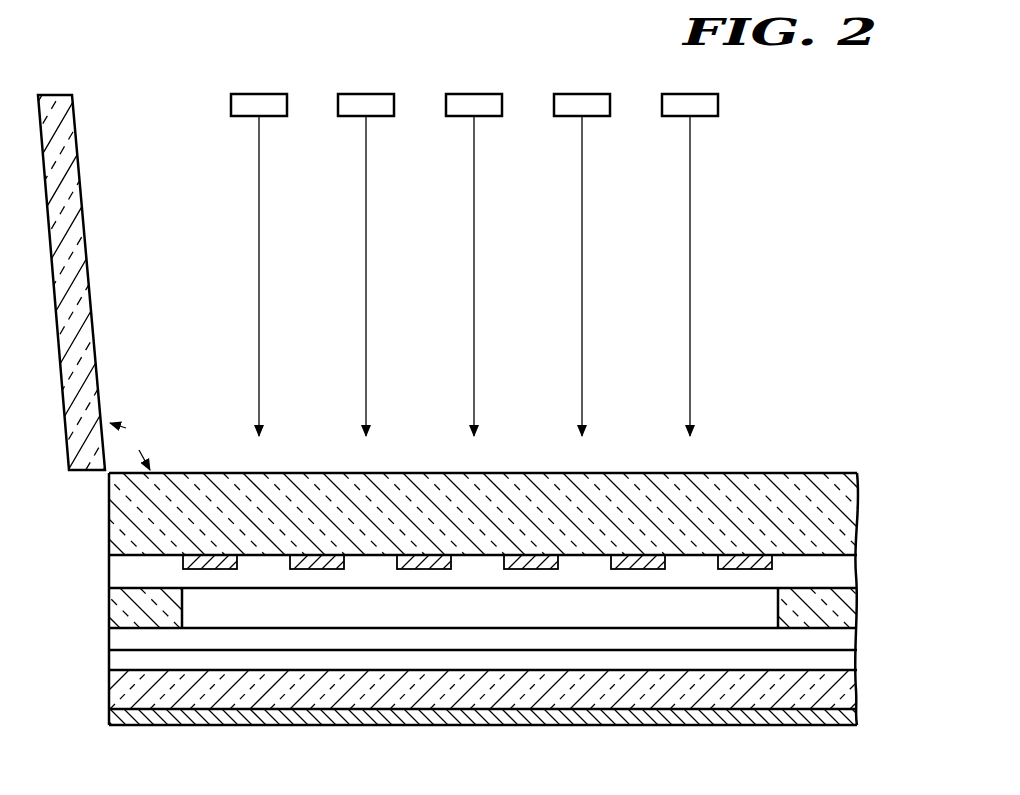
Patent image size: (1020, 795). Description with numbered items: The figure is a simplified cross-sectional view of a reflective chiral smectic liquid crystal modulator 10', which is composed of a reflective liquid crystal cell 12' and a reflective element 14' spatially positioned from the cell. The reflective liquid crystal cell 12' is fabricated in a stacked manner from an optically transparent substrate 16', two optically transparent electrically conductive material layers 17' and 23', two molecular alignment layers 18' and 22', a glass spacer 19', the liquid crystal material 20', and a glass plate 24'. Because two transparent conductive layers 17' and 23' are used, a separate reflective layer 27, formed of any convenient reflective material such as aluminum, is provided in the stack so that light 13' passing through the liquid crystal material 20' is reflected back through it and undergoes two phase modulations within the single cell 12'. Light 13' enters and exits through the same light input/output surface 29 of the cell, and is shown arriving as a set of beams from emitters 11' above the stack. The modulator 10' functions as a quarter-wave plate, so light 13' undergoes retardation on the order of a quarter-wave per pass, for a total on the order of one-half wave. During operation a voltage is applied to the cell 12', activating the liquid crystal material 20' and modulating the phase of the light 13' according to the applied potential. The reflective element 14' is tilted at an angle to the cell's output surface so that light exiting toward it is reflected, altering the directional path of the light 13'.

The reflective chiral smectic liquid crystal modulator 10' is at (494, 425).
The electron emitters 11' is at (474, 87).
The reflective liquid crystal cell 12' is at (494, 613).
The light 13' is at (474, 276).
The reflective element 14' is at (70, 338).
The optically transparent substrate 16' is at (494, 599).
The optically transparent electrically conductive material layer 17' is at (458, 570).
The molecular alignment layer 18' is at (510, 573).
The glass spacer 19' is at (495, 608).
The liquid crystal material 20' is at (480, 609).
The molecular alignment layer 22' is at (510, 641).
The optically transparent electrically conductive material layer 23' is at (510, 664).
The glass plate 24' is at (500, 689).
The reflective layer 27 is at (850, 716).
The light input/output surface 29 is at (768, 475).